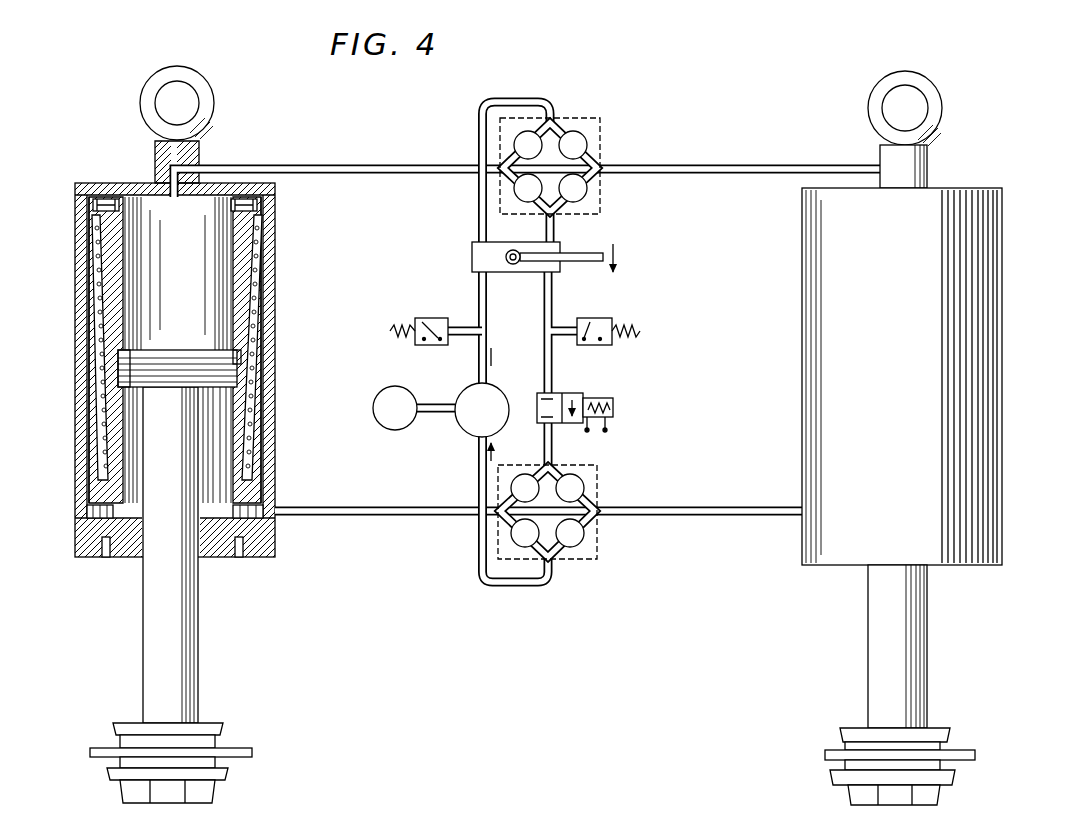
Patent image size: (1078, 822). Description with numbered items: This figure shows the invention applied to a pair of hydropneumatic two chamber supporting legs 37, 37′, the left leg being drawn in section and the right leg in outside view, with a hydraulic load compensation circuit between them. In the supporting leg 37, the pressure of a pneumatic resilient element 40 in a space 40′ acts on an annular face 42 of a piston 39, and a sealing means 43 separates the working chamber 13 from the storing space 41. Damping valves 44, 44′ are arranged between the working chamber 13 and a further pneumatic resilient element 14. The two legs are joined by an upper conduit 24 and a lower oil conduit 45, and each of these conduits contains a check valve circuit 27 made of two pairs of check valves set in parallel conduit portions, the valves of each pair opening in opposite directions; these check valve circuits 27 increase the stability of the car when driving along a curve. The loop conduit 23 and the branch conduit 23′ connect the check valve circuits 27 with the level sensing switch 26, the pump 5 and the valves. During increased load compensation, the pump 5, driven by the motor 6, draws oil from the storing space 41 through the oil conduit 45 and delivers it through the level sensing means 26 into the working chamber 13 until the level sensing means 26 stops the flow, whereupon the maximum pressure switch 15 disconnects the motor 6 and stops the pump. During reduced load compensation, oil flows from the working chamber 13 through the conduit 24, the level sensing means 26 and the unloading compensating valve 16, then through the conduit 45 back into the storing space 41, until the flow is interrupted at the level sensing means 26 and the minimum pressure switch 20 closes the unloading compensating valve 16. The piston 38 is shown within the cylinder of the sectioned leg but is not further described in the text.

The two chamber supporting leg 37 is at (290, 265).
The two chamber supporting leg 37′ is at (1004, 292).
The working chamber 13 is at (135, 266).
The storing space 41 is at (263, 236).
The pneumatic resilient element 14 is at (87, 410).
The pneumatic resilient element 40 is at (268, 322).
The space 40′ is at (215, 460).
The damping valve 44 is at (115, 197).
The damping valve 44′ is at (255, 197).
The annular face 42 is at (220, 397).
The piston 38 is at (170, 350).
The sealing means 43 is at (127, 365).
The piston 39 is at (240, 362).
The conduit 24 is at (362, 165).
The oil conduit 45 is at (378, 515).
The conduit loop 23 is at (478, 192).
The conduit 23′ is at (553, 234).
The check valve circuit 27 is at (604, 150).
The level sensing switch 26 is at (472, 252).
The maximum pressure switch 15 is at (421, 318).
The minimum pressure switch 20 is at (609, 318).
The unloading compensating valve 16 is at (567, 395).
The pump 5 is at (465, 430).
The motor 6 is at (385, 426).